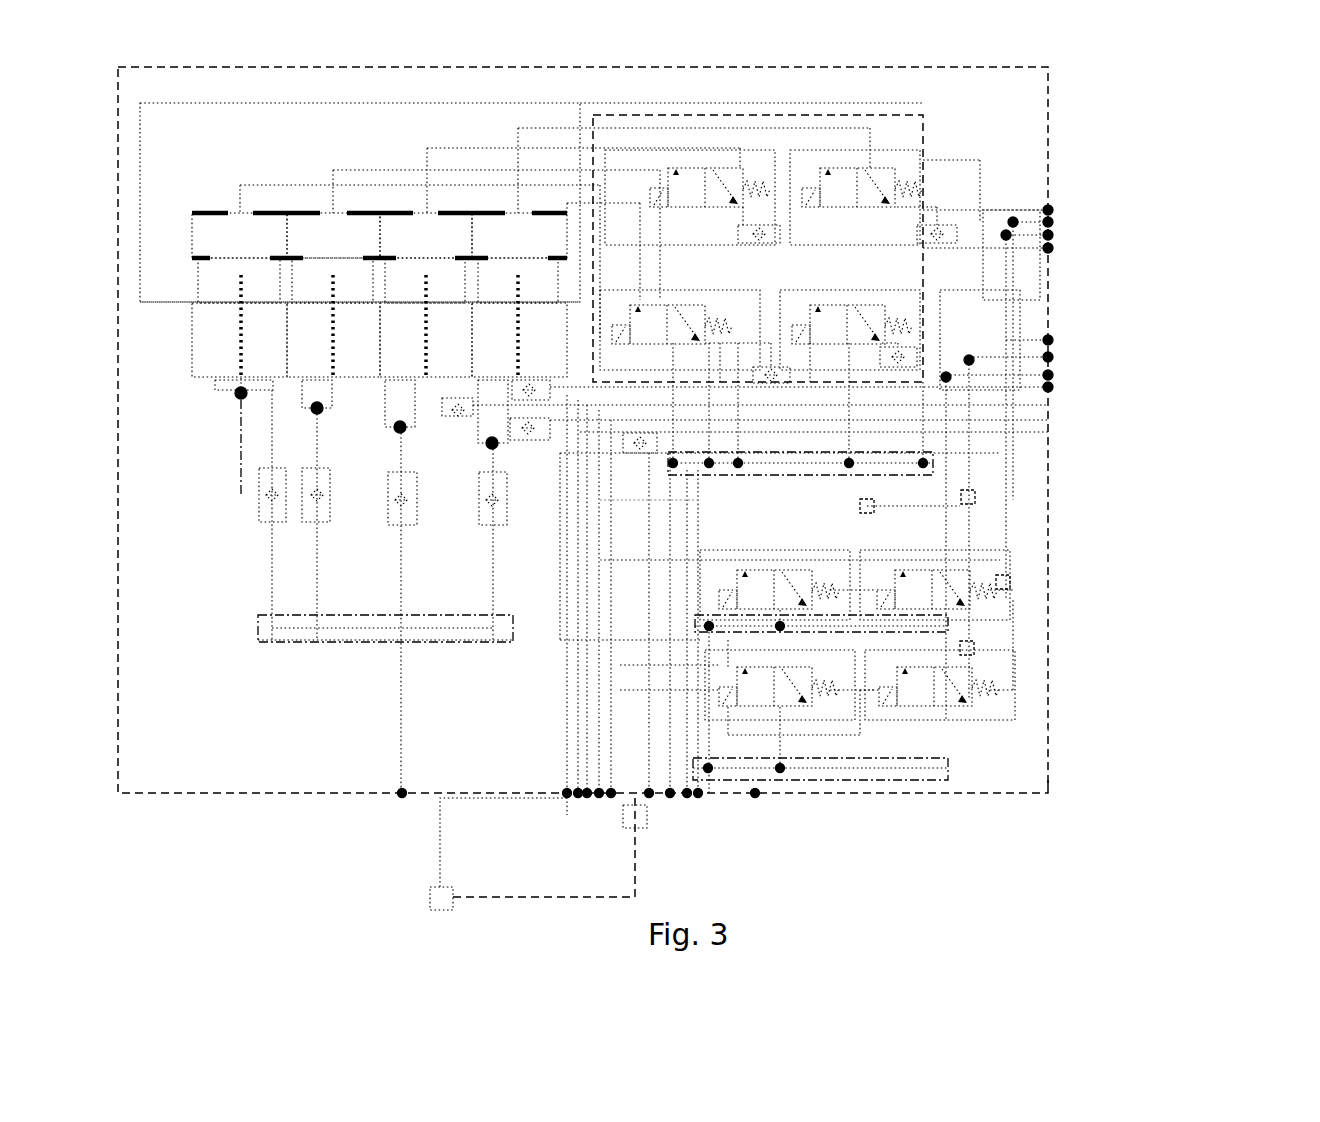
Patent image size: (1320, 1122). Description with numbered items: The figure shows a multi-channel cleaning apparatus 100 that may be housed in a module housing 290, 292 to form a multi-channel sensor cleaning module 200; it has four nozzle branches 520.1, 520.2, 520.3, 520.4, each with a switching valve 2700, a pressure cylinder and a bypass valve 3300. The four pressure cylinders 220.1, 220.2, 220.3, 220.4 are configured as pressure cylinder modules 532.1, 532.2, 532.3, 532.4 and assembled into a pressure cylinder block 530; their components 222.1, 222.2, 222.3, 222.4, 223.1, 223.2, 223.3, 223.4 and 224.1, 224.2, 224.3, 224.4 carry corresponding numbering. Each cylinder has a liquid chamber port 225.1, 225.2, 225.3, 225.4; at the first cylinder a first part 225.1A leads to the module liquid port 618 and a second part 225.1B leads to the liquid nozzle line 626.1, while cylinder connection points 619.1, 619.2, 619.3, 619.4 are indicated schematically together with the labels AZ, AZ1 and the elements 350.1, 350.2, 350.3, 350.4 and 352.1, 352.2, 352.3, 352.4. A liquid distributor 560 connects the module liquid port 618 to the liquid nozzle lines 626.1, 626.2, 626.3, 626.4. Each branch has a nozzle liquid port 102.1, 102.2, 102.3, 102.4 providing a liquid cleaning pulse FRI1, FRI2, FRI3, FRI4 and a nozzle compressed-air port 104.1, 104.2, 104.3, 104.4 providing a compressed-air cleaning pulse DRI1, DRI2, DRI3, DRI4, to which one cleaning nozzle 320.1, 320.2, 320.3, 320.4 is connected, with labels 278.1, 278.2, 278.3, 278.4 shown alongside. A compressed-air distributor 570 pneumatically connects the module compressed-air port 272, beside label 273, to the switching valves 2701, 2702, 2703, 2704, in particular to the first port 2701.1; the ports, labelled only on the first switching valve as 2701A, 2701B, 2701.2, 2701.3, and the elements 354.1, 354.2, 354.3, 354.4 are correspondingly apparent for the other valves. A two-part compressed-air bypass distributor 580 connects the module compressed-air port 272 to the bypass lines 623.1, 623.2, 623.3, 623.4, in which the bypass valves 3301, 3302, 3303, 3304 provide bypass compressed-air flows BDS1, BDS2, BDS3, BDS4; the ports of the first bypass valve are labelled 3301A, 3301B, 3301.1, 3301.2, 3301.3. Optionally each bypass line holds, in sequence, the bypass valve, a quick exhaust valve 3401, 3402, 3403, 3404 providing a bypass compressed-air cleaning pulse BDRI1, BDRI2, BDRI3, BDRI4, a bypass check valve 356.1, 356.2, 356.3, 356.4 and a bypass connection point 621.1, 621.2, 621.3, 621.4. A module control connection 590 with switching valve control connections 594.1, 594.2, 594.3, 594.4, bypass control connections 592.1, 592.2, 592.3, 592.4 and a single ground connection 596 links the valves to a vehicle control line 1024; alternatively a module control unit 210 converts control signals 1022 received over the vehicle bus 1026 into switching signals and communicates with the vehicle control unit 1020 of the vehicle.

The multi-channel cleaning apparatus 100 is at (656, 429).
The multi-channel sensor cleaning module 200 is at (1048, 77).
The module housing 290 is at (1121, 801).
The controller 292 is at (1050, 793).
The pressure cylinder block 530 is at (182, 333).
The first pressure cylinder 220.1 is at (249, 210).
The second pressure cylinder 220.2 is at (337, 228).
The third pressure cylinder 220.3 is at (412, 210).
The fourth pressure cylinder 220.4 is at (511, 228).
The first pressure cylinder module 532.1 is at (249, 210).
The second pressure cylinder module 532.2 is at (337, 228).
The third pressure cylinder module 532.3 is at (412, 210).
The fourth pressure cylinder module 532.4 is at (511, 228).
The service brake chamber 222.1 is at (239, 235).
The service brake chamber 222.2 is at (333, 235).
The service brake chamber 222.3 is at (426, 235).
The service brake chamber 222.4 is at (519, 235).
The piston rod 223.1 is at (241, 210).
The piston rod 223.2 is at (333, 210).
The piston rod 223.3 is at (426, 210).
The piston rod 223.4 is at (518, 210).
The parking brake chamber 224.1 is at (239, 317).
The parking brake chamber 224.2 is at (333, 317).
The parking brake chamber 224.3 is at (426, 317).
The parking brake chamber 224.4 is at (519, 317).
The first liquid chamber port 225.1 is at (182, 380).
The first part of the liquid chamber port 225.1A is at (236, 394).
The second part of the liquid chamber port 225.1B is at (270, 382).
The liquid chamber port 225.2 is at (308, 386).
The liquid chamber port 225.3 is at (396, 386).
The liquid chamber port 225.4 is at (488, 386).
The axle AZ is at (191, 497).
The first axle AZ1 is at (240, 478).
The cylinder connection point 619.1 is at (268, 395).
The cylinder connection point 619.2 is at (312, 418).
The cylinder connection point 619.3 is at (405, 435).
The cylinder connection point 619.4 is at (490, 455).
The check valve 352.1 is at (266, 512).
The check valve 352.2 is at (360, 490).
The check valve 352.3 is at (395, 510).
The check valve 352.4 is at (487, 512).
The check valve 350.1 is at (542, 397).
The check valve 350.2 is at (450, 418).
The check valve 350.3 is at (518, 440).
The check valve 350.4 is at (645, 450).
The liquid distributor 560 is at (371, 618).
The first nozzle branch 520.1 is at (264, 652).
The second nozzle branch 520.2 is at (318, 652).
The third nozzle branch 520.3 is at (389, 652).
The fourth nozzle branch 520.4 is at (486, 652).
The switching valve 2700 is at (910, 138).
The first switching valve 2701 is at (656, 355).
The second switching valve 2702 is at (832, 352).
The third switching valve 2703 is at (729, 158).
The fourth switching valve 2704 is at (880, 158).
The valve port 2701A is at (648, 308).
The valve port 2701B is at (698, 310).
The first port of the first switching valve 2701.1 is at (711, 403).
The valve line 2701.2 is at (673, 343).
The valve line 2701.3 is at (738, 345).
The check valve 354.1 is at (768, 372).
The check valve 354.2 is at (900, 355).
The check valve 354.3 is at (762, 232).
The check valve 354.4 is at (940, 225).
The bypass connection point 621.1 is at (946, 380).
The bypass connection point 621.2 is at (968, 358).
The bypass connection point 621.3 is at (1000, 238).
The bypass connection point 621.4 is at (1013, 222).
The first liquid nozzle line 626.1 is at (1098, 427).
The second liquid nozzle line 626.2 is at (1101, 321).
The third liquid nozzle line 626.3 is at (1101, 267).
The fourth liquid nozzle line 626.4 is at (1088, 156).
The first liquid cleaning pulse FRI1 is at (1020, 375).
The second liquid cleaning pulse FRI2 is at (1040, 340).
The third liquid cleaning pulse FRI3 is at (1025, 235).
The fourth liquid cleaning pulse FRI4 is at (1000, 222).
The data interface 278.1 is at (1135, 453).
The data interface 278.2 is at (1159, 331).
The data interface 278.3 is at (1171, 262).
The data interface 278.4 is at (1171, 162).
The first compressed-air cleaning pulse DRI1 is at (1135, 453).
The second compressed-air cleaning pulse DRI2 is at (1159, 331).
The third compressed-air cleaning pulse DRI3 is at (1171, 262).
The fourth compressed-air cleaning pulse DRI4 is at (1171, 162).
The first bypass compressed-air flow BDS1 is at (1135, 453).
The second bypass compressed-air flow BDS2 is at (1159, 331).
The third bypass compressed-air flow BDS3 is at (1171, 262).
The fourth bypass compressed-air flow BDS4 is at (1171, 162).
The first bypass compressed-air cleaning pulse BDRI1 is at (1035, 387).
The second bypass compressed-air cleaning pulse BDRI2 is at (1048, 340).
The third bypass compressed-air cleaning pulse BDRI3 is at (1048, 248).
The fourth bypass compressed-air cleaning pulse BDRI4 is at (1048, 210).
The first nozzle liquid port 102.1 is at (1048, 387).
The second nozzle liquid port 102.2 is at (1048, 357).
The third nozzle liquid port 102.3 is at (1048, 235).
The fourth nozzle liquid port 102.4 is at (1048, 222).
The first nozzle compressed-air port 104.1 is at (1048, 375).
The second nozzle compressed-air port 104.2 is at (1048, 375).
The third nozzle compressed-air port 104.3 is at (1048, 222).
The fourth nozzle compressed-air port 104.4 is at (1048, 235).
The first cleaning nozzle 320.1 is at (1080, 382).
The second cleaning nozzle 320.2 is at (1048, 340).
The third cleaning nozzle 320.3 is at (1070, 232).
The fourth cleaning nozzle 320.4 is at (1070, 218).
The compressed-air distributor 570 is at (897, 478).
The compressed-air bypass distributor 580 is at (1030, 649).
The signal line 273 is at (715, 494).
The module compressed-air port 272 is at (760, 797).
The bypass valve 3300 is at (1050, 600).
The first bypass valve 3301 is at (748, 596).
The second bypass valve 3302 is at (920, 566).
The third bypass valve 3303 is at (765, 712).
The fourth bypass valve 3304 is at (922, 710).
The valve port 3301A is at (785, 583).
The valve port 3301B is at (752, 574).
The valve line 3301.1 is at (780, 612).
The valve line 3301.2 is at (780, 572).
The valve line 3301.3 is at (802, 590).
The first bypass line 623.1 is at (805, 505).
The second bypass line 623.2 is at (960, 538).
The third bypass line 623.3 is at (820, 637).
The fourth bypass line 623.4 is at (968, 655).
The first quick exhaust valve 3401 is at (1072, 537).
The second quick exhaust valve 3402 is at (1019, 517).
The third quick exhaust valve 3403 is at (1084, 574).
The fourth quick exhaust valve 3404 is at (1074, 698).
The first bypass check valve 356.1 is at (972, 518).
The second bypass check valve 356.2 is at (975, 497).
The third bypass check valve 356.3 is at (1010, 582).
The fourth bypass check valve 356.4 is at (990, 670).
The module control connection 590 is at (555, 791).
The first switching valve control connection 594.1 is at (578, 800).
The second switching valve control connection 594.2 is at (599, 800).
The third switching valve control connection 594.3 is at (566, 800).
The fourth switching valve control connection 594.4 is at (587, 800).
The ground connection 596 is at (611, 800).
The first bypass control connection 592.1 is at (649, 800).
The second bypass control connection 592.2 is at (670, 800).
The third bypass control connection 592.3 is at (687, 800).
The fourth bypass control connection 592.4 is at (698, 800).
The module control unit 210 is at (640, 805).
The module liquid port 618 is at (402, 798).
The control signals 1022 is at (433, 881).
The vehicle control line 1024 is at (433, 881).
The vehicle bus 1026 is at (540, 900).
The vehicle control unit 1020 is at (428, 897).